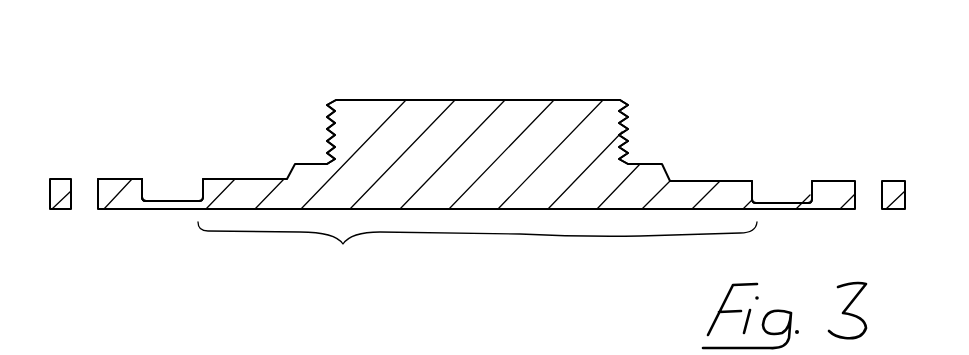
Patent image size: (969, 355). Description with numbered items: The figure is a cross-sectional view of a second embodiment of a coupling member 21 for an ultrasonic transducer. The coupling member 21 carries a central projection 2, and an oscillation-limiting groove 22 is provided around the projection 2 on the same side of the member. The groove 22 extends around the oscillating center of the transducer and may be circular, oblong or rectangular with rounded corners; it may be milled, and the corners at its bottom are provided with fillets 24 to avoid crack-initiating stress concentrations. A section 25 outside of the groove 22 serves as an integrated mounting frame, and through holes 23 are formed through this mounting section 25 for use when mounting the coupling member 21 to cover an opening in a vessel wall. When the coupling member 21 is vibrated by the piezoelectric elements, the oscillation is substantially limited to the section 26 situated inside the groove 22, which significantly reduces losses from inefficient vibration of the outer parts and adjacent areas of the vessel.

The coupling member 21 is at (648, 63).
The projection 2 is at (597, 134).
The oscillation-limiting groove 22 is at (162, 200).
The through holes 23 is at (83, 180).
The fillets 24 is at (150, 198).
The section outside of the groove 25 is at (118, 178).
The section inside the groove 26 is at (477, 256).